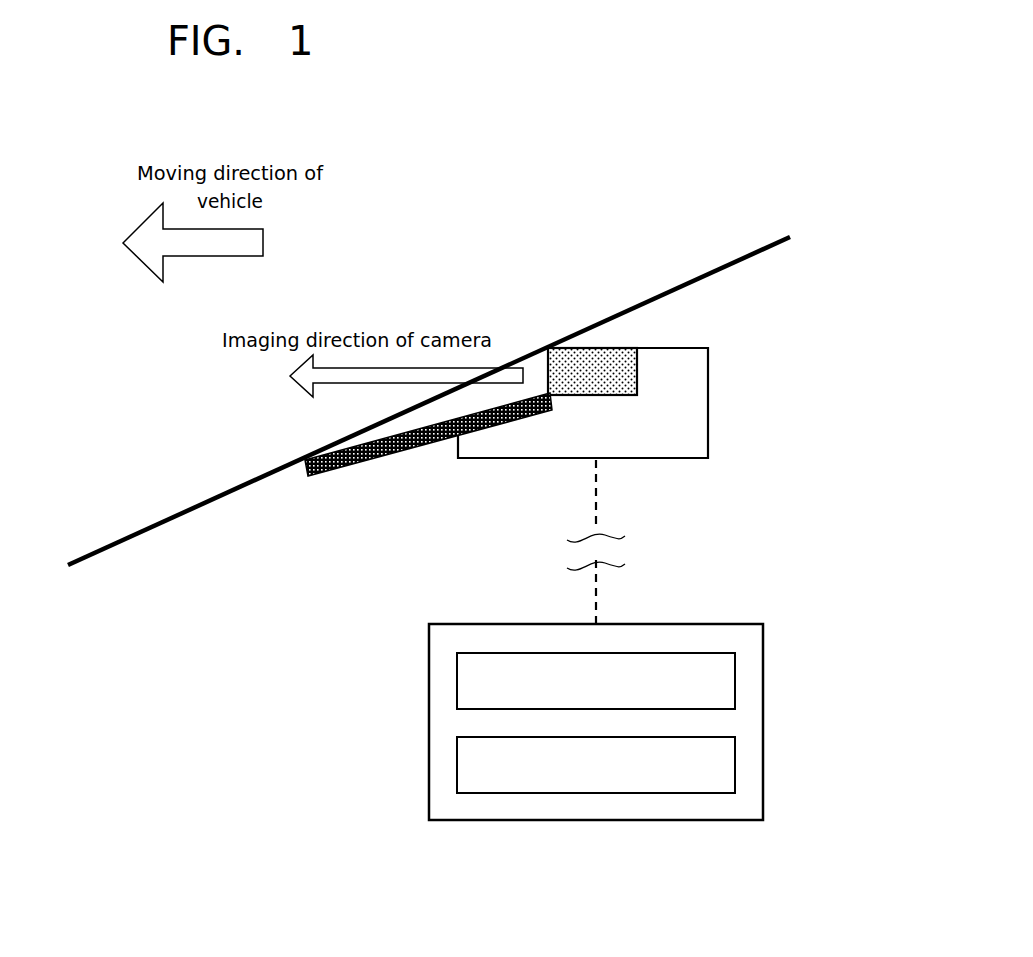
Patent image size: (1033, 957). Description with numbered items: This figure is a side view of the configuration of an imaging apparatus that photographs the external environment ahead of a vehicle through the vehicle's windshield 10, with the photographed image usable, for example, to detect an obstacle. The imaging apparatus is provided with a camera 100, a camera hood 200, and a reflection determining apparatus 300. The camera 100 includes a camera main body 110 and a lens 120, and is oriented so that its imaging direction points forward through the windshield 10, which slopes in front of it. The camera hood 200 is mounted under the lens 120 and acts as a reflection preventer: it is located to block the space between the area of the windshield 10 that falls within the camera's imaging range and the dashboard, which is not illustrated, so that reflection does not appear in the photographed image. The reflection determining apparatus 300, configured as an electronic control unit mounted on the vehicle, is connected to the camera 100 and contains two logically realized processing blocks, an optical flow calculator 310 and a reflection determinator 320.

The windshield 10 is at (690, 280).
The camera 100 is at (611, 394).
The camera main body 110 is at (700, 348).
The lens 120 is at (597, 348).
The camera hood 200 is at (410, 448).
The reflection determining apparatus 300 is at (630, 696).
The optical flow calculator 310 is at (735, 680).
The reflection determinator 320 is at (735, 763).